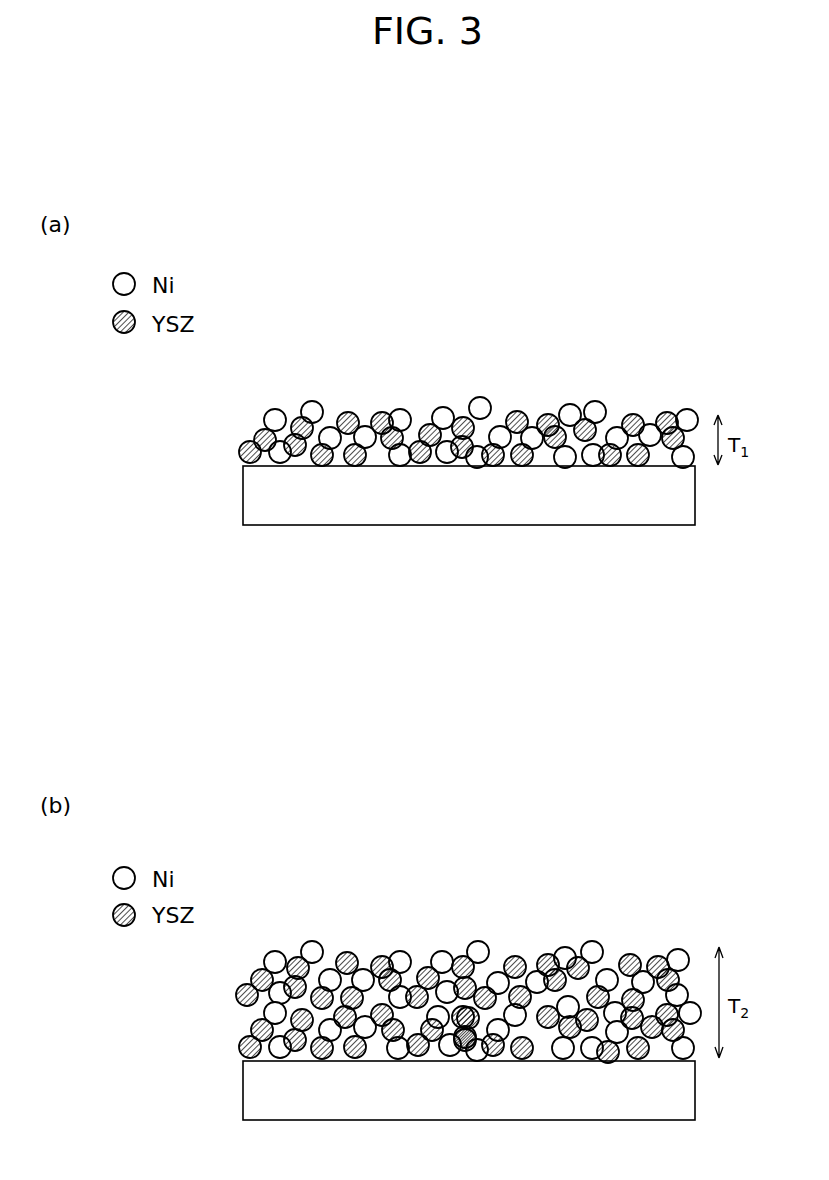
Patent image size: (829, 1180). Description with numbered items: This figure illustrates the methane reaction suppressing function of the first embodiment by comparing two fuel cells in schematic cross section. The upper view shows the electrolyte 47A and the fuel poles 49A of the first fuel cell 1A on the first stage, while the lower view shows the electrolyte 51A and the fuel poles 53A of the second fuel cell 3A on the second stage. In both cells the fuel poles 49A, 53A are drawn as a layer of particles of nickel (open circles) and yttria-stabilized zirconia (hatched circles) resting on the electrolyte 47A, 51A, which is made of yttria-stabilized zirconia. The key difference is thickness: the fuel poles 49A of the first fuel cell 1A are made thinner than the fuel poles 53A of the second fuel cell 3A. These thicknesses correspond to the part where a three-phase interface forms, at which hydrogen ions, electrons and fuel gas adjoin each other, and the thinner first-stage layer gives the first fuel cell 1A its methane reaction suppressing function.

The first fuel cell 1A is at (540, 378).
The fuel poles 49A is at (237, 403).
The electrolyte 47A is at (250, 497).
The second fuel cell 3A is at (540, 895).
The fuel poles 53A is at (237, 942).
The electrolyte 51A is at (248, 1091).